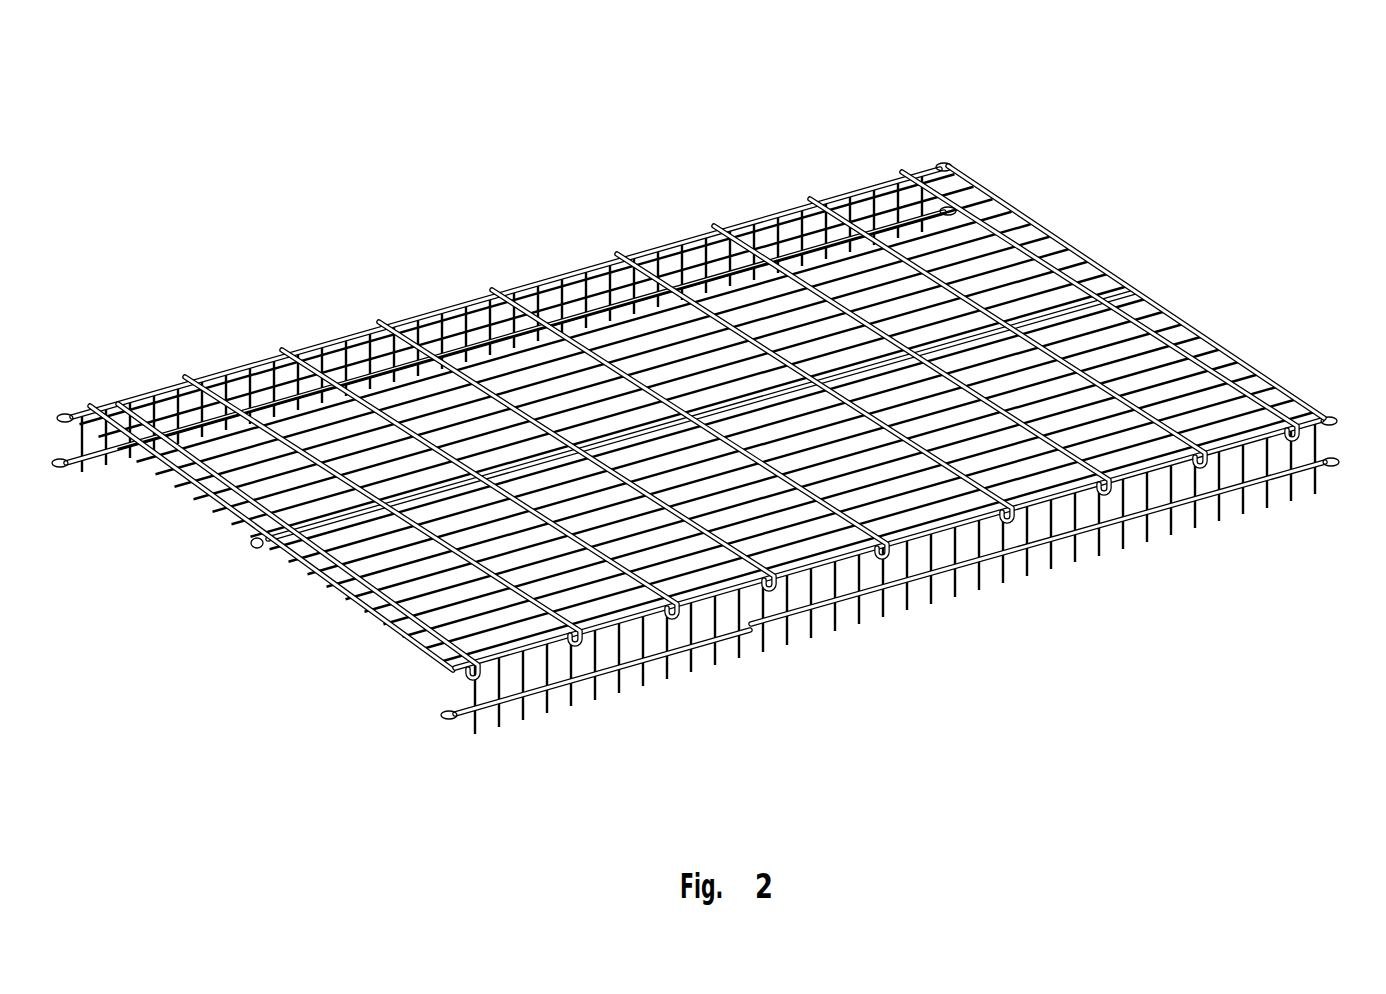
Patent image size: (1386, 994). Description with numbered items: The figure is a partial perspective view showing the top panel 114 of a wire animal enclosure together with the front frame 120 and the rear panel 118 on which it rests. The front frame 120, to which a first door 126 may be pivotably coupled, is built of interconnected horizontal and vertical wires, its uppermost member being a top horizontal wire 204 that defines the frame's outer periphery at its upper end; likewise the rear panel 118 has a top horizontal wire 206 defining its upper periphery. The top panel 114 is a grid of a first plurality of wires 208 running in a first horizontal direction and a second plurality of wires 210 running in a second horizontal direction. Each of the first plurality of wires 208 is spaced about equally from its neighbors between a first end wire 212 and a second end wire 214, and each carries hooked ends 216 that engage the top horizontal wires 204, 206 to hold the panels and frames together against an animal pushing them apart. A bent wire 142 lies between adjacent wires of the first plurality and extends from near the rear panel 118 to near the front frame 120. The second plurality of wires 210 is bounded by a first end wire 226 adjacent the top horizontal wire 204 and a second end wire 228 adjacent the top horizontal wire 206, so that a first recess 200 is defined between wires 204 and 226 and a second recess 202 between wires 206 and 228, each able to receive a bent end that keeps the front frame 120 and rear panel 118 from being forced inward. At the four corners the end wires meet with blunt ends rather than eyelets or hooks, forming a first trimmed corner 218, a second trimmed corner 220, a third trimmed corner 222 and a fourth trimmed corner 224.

The top panel 114 is at (1000, 300).
The rear panel 118 is at (900, 210).
The front frame 120 is at (585, 690).
The first door 126 is at (1060, 560).
The bent wire 142 is at (612, 350).
The first recess or opening 200 is at (891, 572).
The second recess or opening 202 is at (492, 286).
The top horizontal wire 204 is at (526, 700).
The top horizontal wire 206 is at (140, 395).
The first plurality of wires 208 is at (358, 347).
The second plurality of wires 210 is at (440, 665).
The first end wire 212 is at (225, 527).
The second end wire 214 is at (1170, 310).
The hooked ends 216 is at (378, 326).
The first trimmed corner 218 is at (442, 677).
The second trimmed corner 220 is at (65, 408).
The third trimmed corner 222 is at (1331, 410).
The fourth trimmed corner 224 is at (946, 156).
The first end wire 226 is at (826, 580).
The second end wire 228 is at (745, 212).